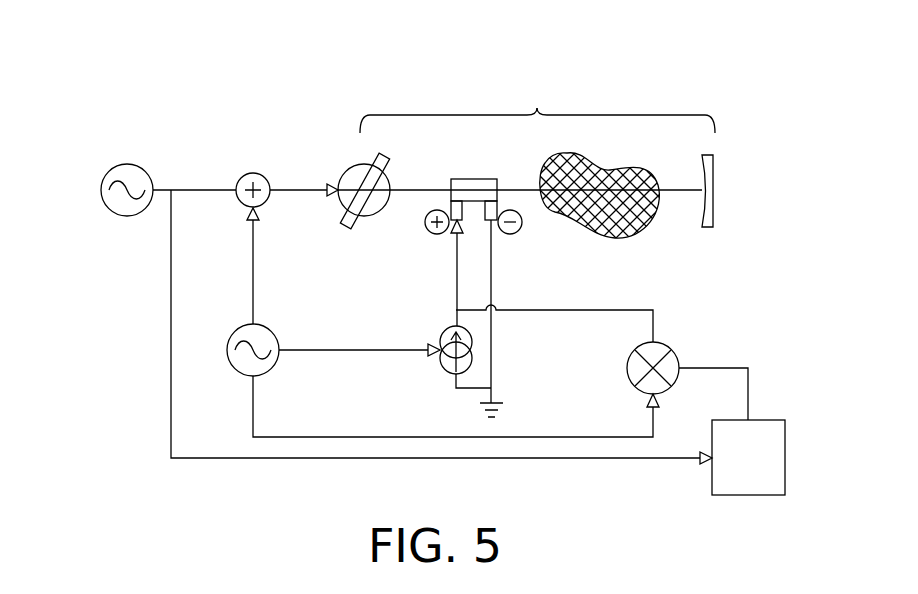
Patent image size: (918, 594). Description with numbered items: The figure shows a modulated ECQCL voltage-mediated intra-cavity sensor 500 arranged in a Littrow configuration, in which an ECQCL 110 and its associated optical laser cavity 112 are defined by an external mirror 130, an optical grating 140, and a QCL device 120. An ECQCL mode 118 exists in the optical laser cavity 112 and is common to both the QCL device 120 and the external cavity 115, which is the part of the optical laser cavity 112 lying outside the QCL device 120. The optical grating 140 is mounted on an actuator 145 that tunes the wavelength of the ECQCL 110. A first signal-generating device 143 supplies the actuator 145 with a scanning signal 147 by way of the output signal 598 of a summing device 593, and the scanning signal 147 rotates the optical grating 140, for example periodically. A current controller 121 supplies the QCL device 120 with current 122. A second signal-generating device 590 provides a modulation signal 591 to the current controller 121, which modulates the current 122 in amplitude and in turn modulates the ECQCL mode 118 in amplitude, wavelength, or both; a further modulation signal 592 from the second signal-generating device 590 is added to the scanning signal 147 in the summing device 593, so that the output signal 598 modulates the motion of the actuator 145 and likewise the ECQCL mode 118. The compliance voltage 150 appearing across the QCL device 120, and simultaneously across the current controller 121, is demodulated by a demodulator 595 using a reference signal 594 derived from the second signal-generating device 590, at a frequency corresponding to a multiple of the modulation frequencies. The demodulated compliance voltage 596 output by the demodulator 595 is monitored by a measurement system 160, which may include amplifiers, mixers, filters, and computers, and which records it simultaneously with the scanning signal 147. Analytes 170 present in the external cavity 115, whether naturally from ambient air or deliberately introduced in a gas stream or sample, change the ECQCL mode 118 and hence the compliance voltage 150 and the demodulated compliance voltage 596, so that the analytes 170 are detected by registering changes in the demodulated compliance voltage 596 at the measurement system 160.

The modulated ECQCL voltage-mediated intra-cavity sensor 500 is at (200, 67).
The first signal-generating device 143 is at (114, 167).
The scanning signal 147 is at (195, 189).
The summing device 593 is at (248, 173).
The output signal 598 is at (290, 195).
The optical grating 140 is at (345, 170).
The actuator 145 is at (373, 214).
The QCL device 120 is at (462, 177).
The optical laser cavity 112 is at (440, 113).
The ECQCL 110 is at (537, 85).
The external cavity 115 is at (537, 106).
The ECQCL mode 118 is at (688, 186).
The external mirror 130 is at (703, 228).
The analyte 170 is at (603, 238).
The modulation signal 592 is at (251, 232).
The second signal-generating device 590 is at (238, 327).
The modulation signal 591 is at (343, 348).
The reference signal 594 is at (333, 435).
The current controller 121 is at (437, 366).
The current 122 is at (455, 285).
The compliance voltage 150 is at (617, 313).
The demodulator 595 is at (665, 342).
The demodulated compliance voltage 596 is at (735, 367).
The measurement system 160 is at (730, 469).